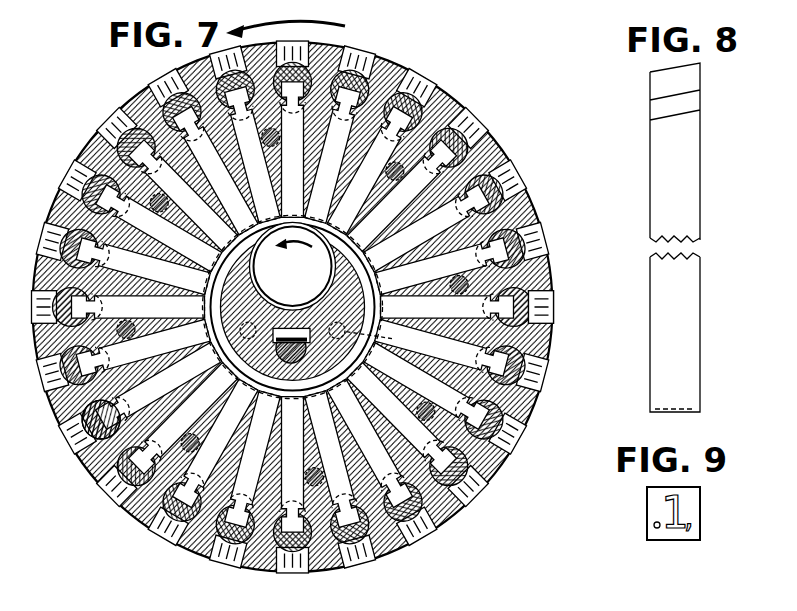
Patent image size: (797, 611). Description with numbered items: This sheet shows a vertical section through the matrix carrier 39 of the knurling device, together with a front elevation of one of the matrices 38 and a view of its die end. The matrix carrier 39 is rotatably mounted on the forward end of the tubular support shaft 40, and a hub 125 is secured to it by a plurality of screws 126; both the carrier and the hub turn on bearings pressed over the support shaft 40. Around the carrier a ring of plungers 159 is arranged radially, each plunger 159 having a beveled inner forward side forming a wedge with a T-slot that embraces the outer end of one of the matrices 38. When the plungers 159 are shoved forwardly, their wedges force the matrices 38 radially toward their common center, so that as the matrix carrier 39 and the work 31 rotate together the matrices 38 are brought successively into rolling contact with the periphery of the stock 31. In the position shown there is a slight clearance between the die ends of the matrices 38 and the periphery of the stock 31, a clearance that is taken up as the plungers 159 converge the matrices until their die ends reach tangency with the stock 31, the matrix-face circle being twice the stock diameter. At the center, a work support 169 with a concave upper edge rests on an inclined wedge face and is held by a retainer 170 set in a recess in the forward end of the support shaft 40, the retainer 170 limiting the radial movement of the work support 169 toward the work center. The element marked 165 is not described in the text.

In FIG. 7, the work 31 is at (318, 259).
In FIG. 7, the matrices 38 is at (460, 221).
In FIG. 8, the matrices 38 is at (690, 153).
In FIG. 7, the matrix carrier 39 is at (95, 458).
In FIG. 7, the support shaft 40 is at (240, 268).
In FIG. 7, the hub 125 is at (108, 416).
In FIG. 7, the screws 126 is at (135, 322).
In FIG. 7, the plunger 159 is at (528, 305).
In FIG. 7, the plug 165 is at (289, 352).
In FIG. 7, the work support 169 is at (272, 282).
In FIG. 7, the retainer 170 is at (387, 342).